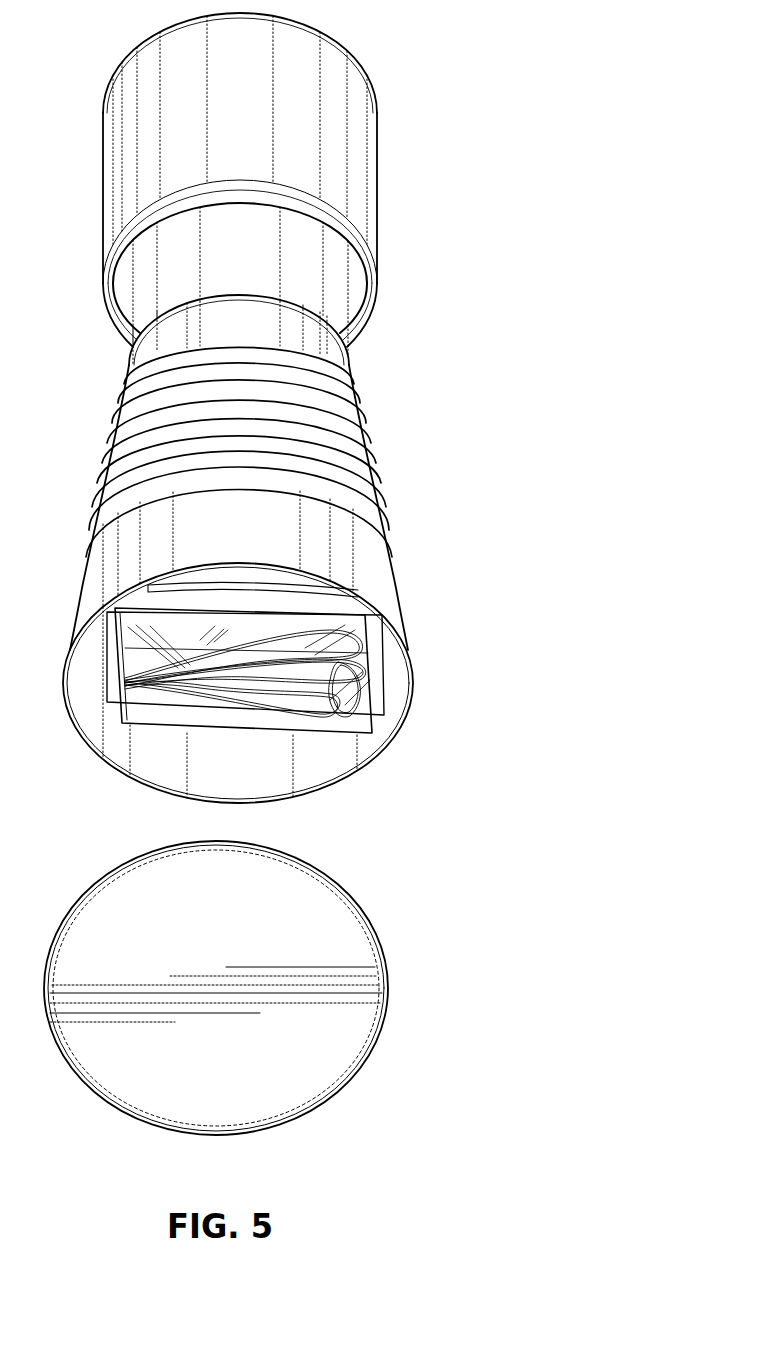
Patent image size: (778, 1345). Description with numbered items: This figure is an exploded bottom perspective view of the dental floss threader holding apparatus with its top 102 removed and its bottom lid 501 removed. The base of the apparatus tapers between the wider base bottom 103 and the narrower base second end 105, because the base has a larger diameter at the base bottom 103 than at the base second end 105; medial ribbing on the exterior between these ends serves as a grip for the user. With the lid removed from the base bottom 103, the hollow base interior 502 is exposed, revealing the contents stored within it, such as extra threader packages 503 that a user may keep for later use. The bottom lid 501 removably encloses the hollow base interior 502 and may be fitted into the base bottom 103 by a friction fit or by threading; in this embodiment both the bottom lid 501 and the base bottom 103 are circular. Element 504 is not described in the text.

The top 102 is at (353, 162).
The base second end 105 is at (353, 370).
The base bottom 103 is at (380, 748).
The hollow base interior 502 is at (118, 745).
The threader packages 503 is at (383, 697).
The disc cover 504 is at (368, 920).
The bottom lid 501 is at (360, 1008).